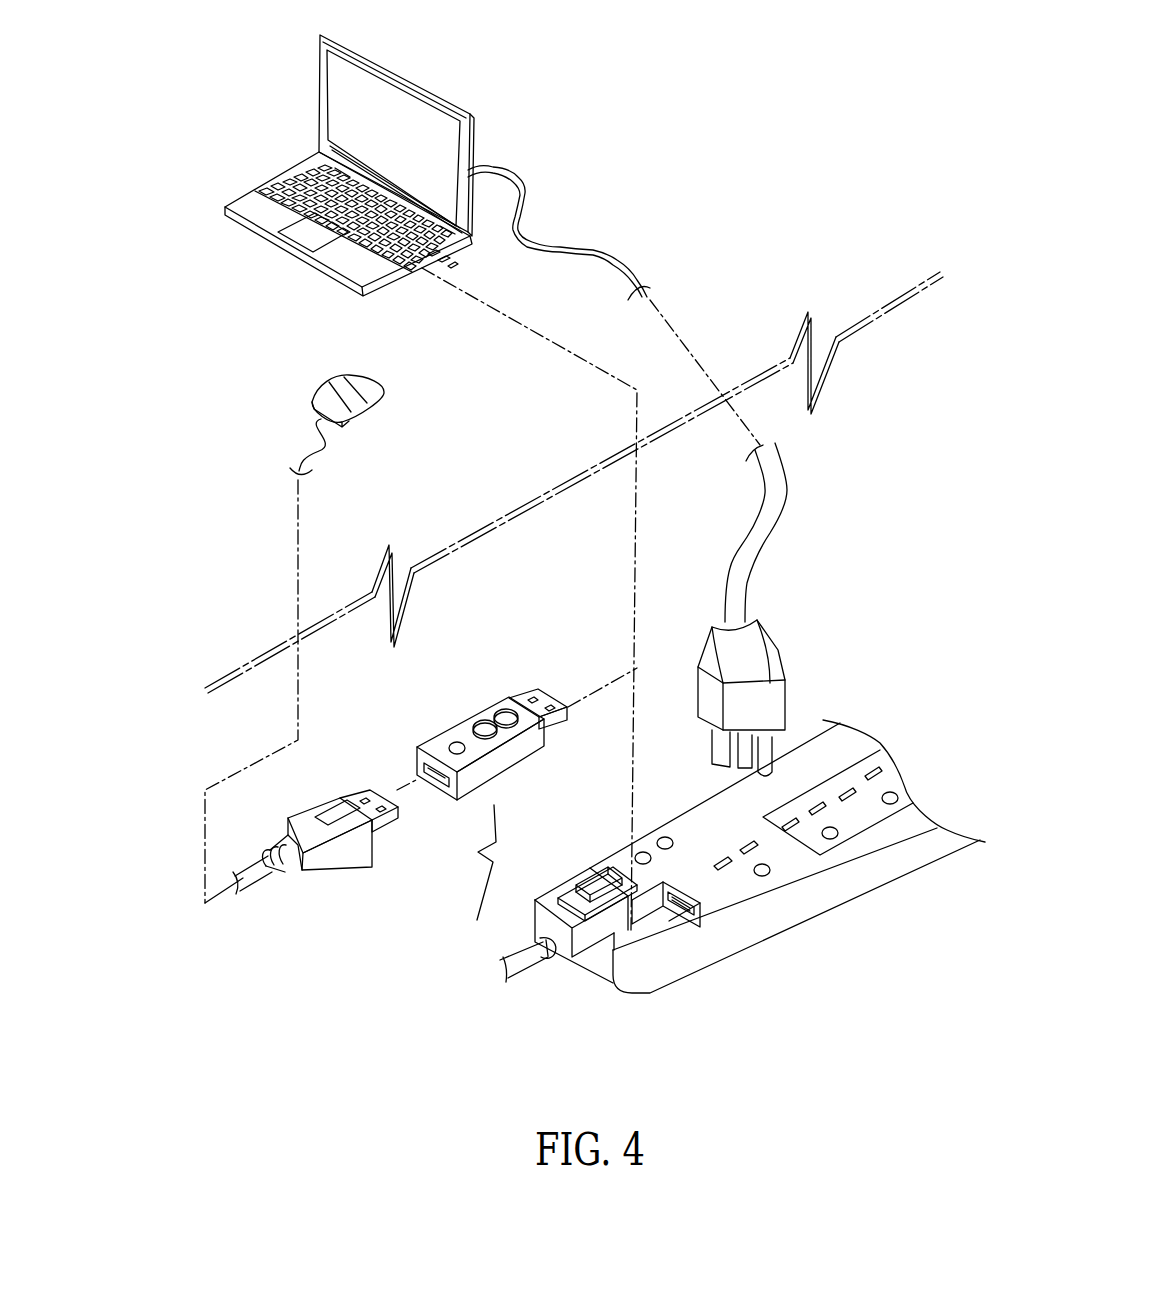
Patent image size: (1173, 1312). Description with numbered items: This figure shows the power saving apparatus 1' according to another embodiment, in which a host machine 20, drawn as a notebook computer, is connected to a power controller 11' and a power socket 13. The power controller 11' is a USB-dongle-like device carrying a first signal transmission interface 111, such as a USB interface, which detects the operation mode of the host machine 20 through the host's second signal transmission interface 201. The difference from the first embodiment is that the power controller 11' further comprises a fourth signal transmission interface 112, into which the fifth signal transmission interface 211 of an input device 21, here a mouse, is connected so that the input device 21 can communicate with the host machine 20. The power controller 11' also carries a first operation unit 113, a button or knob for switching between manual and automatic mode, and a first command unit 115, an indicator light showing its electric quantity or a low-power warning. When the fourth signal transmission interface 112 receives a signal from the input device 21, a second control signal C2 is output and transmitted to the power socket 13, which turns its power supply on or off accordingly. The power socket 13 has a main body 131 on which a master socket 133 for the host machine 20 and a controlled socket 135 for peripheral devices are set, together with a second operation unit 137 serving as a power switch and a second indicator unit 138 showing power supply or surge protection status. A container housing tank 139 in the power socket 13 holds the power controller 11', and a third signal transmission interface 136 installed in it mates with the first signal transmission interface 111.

The host machine 20 is at (349, 201).
The second signal transmission interface 201 is at (428, 268).
The input device 21 is at (380, 410).
The fifth signal transmission interface 211 is at (364, 790).
The power controller 11' is at (493, 741).
The first signal transmission interface 111 is at (552, 700).
The fourth signal transmission interface 112 is at (442, 785).
The first operation unit 113 is at (505, 716).
The first command unit 115 is at (455, 741).
The second control signal C2 is at (478, 893).
The power saving apparatus 1' is at (742, 869).
The power socket 13 is at (742, 890).
The main body 131 is at (677, 990).
The master socket 133 is at (740, 875).
The controlled socket 135 is at (863, 817).
The third signal transmission interface 136 is at (683, 913).
The second operation unit 137 is at (590, 890).
The second indicator unit 138 is at (664, 838).
The container housing tank 139 is at (602, 965).